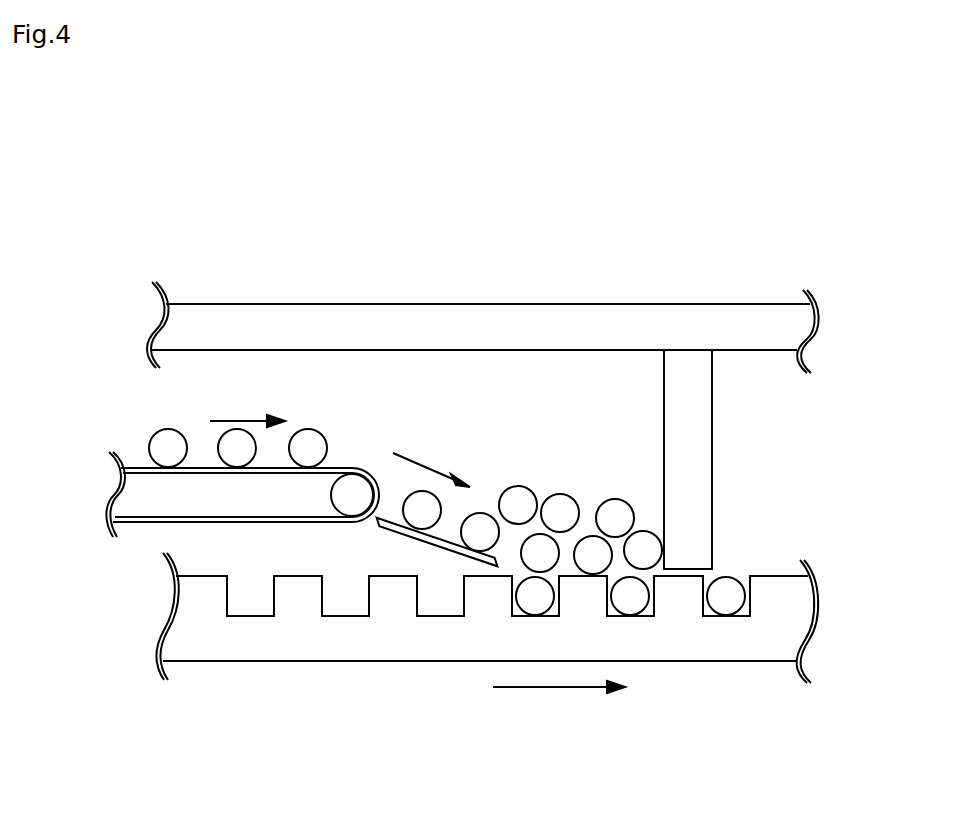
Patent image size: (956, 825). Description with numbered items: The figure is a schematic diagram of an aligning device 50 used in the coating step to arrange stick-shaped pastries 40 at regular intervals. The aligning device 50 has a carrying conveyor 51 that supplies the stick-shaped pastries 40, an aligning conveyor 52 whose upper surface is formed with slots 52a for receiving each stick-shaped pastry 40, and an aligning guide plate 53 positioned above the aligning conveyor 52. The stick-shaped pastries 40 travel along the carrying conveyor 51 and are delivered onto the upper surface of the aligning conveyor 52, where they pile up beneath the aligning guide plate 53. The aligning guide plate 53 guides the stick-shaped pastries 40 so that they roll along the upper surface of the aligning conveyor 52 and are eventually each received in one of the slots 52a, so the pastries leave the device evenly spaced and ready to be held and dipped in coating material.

The stick-shaped pastry 40 is at (155, 434).
The aligning device 50 is at (829, 421).
The carrying conveyor 51 is at (363, 443).
The aligning conveyor 52 is at (776, 564).
The slot 52a is at (239, 616).
The aligning guide plate 53 is at (704, 482).